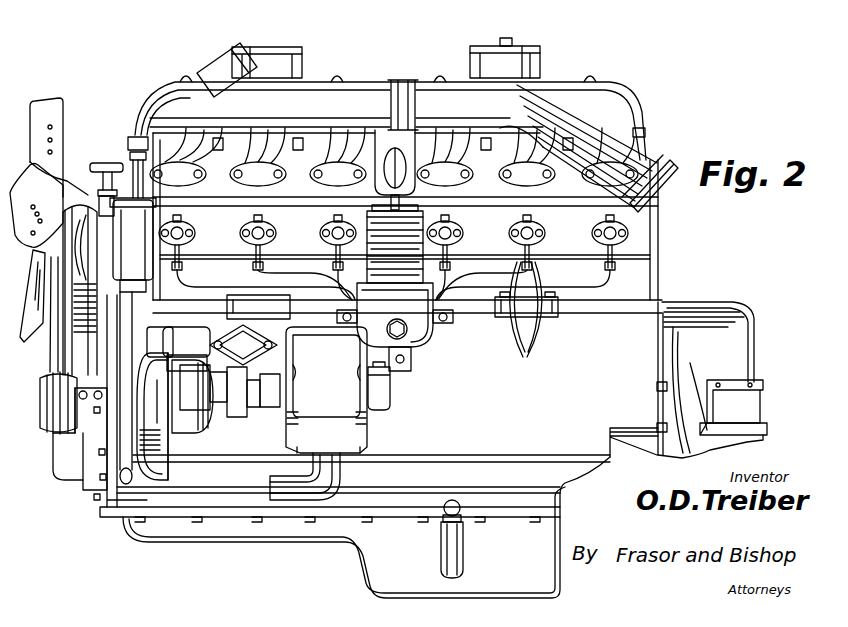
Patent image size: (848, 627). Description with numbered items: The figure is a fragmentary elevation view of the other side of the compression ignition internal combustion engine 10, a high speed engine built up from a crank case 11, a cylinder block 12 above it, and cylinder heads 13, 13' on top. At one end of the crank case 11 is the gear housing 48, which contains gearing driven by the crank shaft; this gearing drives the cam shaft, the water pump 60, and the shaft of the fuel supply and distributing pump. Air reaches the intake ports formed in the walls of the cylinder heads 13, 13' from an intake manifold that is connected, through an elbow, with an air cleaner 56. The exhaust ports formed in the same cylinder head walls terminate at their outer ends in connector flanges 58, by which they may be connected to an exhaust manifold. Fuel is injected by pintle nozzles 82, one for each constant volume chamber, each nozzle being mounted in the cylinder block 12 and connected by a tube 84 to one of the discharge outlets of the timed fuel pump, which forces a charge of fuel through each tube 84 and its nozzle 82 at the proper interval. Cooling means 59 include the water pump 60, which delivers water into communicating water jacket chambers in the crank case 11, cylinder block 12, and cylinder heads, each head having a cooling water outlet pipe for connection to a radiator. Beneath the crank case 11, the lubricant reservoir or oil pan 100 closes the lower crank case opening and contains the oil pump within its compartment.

The compression ignition internal combustion engine 10 is at (147, 542).
The crank case 11 is at (442, 397).
The cylinder block 12 is at (643, 253).
The cylinder head 13 is at (119, 153).
The cylinder head 13' is at (592, 147).
The gear housing 48 is at (93, 433).
The air cleaner 56 is at (300, 63).
The connector flange 58 is at (274, 186).
The cooling means 59 is at (361, 430).
The water pump 60 is at (302, 428).
The pintle nozzle 82 is at (186, 229).
The tube 84 is at (316, 278).
The oil pan 100 is at (373, 566).